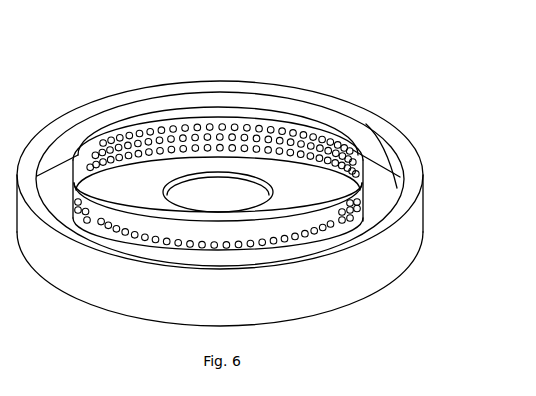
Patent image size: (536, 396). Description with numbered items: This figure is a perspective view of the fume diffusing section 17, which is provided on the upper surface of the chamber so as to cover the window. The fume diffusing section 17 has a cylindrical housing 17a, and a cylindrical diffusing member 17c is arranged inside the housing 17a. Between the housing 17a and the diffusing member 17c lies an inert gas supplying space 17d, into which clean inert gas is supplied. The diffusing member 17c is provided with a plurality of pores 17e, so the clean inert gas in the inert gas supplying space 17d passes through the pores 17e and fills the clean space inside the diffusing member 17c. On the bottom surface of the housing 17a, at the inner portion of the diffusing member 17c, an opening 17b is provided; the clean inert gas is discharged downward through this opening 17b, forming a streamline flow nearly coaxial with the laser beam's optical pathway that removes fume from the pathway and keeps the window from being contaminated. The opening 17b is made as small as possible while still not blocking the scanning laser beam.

The fume diffusing section 17 is at (432, 108).
The cylindrical housing 17a is at (409, 148).
The opening 17b is at (206, 208).
The cylindrical diffusing member 17c is at (271, 116).
The inert gas supplying space 17d is at (386, 167).
The pores 17e is at (214, 123).